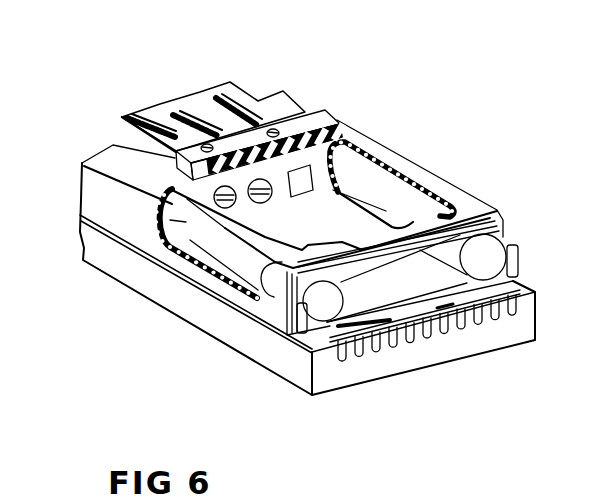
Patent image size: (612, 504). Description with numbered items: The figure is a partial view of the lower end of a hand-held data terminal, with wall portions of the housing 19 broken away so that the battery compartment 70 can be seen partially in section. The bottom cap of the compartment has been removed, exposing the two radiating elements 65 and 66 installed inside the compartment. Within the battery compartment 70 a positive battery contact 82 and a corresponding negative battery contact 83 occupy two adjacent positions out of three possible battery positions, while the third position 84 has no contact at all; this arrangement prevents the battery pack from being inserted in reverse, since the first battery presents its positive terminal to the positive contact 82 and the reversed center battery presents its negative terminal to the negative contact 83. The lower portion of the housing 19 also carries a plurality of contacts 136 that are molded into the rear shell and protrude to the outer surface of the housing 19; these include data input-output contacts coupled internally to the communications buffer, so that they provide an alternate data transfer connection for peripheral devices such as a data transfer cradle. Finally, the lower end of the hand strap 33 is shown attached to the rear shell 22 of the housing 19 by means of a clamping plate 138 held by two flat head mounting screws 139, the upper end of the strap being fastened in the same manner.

The housing 19 is at (338, 120).
The rear shell 22 is at (110, 153).
The hand strap 33 is at (193, 100).
The radiating element 65 is at (398, 183).
The radiating element 66 is at (193, 242).
The battery compartment 70 is at (400, 292).
The positive battery contact 82 is at (240, 205).
The negative battery contact 83 is at (273, 200).
The third position 84 is at (303, 183).
The contacts 136 is at (390, 362).
The clamping plate 138 is at (283, 91).
The flat head mounting screws 139 is at (283, 122).